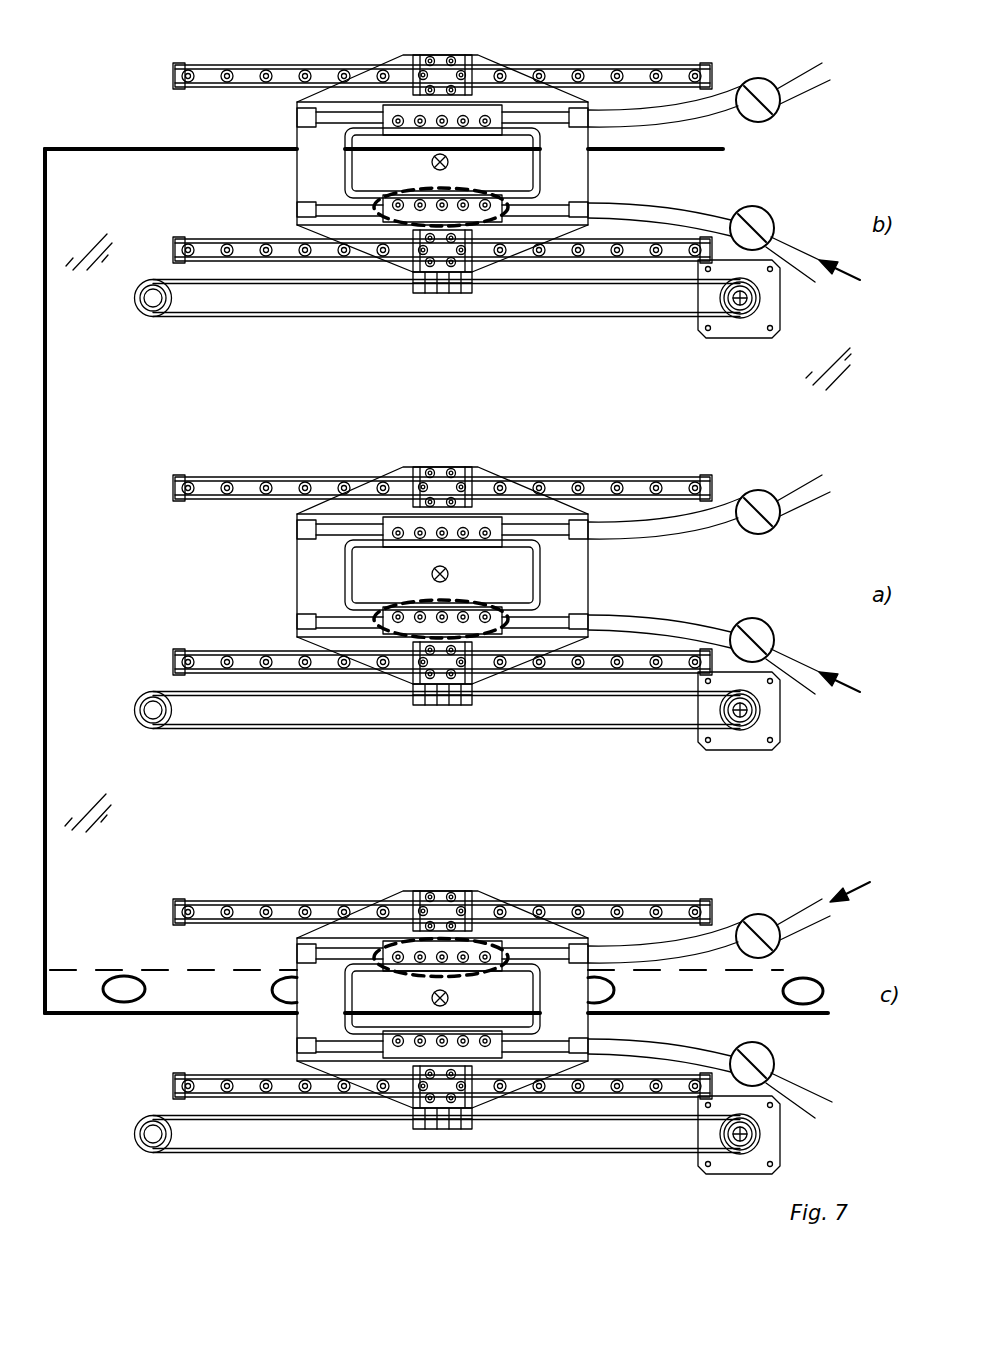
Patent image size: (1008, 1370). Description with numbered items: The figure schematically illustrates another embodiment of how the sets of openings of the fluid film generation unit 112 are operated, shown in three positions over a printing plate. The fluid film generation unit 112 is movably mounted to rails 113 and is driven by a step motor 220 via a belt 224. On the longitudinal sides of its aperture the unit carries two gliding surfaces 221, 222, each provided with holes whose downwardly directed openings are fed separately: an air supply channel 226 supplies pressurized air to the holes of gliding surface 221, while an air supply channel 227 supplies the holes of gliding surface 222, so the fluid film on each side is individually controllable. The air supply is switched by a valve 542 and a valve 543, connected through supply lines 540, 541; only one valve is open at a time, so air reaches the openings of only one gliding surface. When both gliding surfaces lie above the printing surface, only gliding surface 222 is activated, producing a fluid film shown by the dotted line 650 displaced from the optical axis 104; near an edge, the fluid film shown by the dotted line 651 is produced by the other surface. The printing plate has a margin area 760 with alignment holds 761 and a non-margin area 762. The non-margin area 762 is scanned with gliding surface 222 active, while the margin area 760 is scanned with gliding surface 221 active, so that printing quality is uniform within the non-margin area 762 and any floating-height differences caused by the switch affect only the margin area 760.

The rails 113 is at (202, 77).
The optical axis 104 is at (440, 162).
The fluid film 650 is at (385, 192).
The fluid film 651 is at (385, 976).
The fluid film generation unit 112 is at (305, 170).
The belt 224 is at (208, 316).
The gliding surface 222 is at (390, 224).
The air supply channel 226 is at (540, 212).
The step motor 220 is at (728, 333).
The gliding surface 221 is at (492, 130).
The air supply channel 227 is at (553, 117).
The supply line 541 is at (698, 115).
The valve 543 is at (781, 108).
The return line 540 is at (670, 210).
The valve 542 is at (760, 222).
The non-margin area 762 is at (118, 929).
The alignment holds 761 is at (131, 975).
The margin area 760 is at (60, 990).